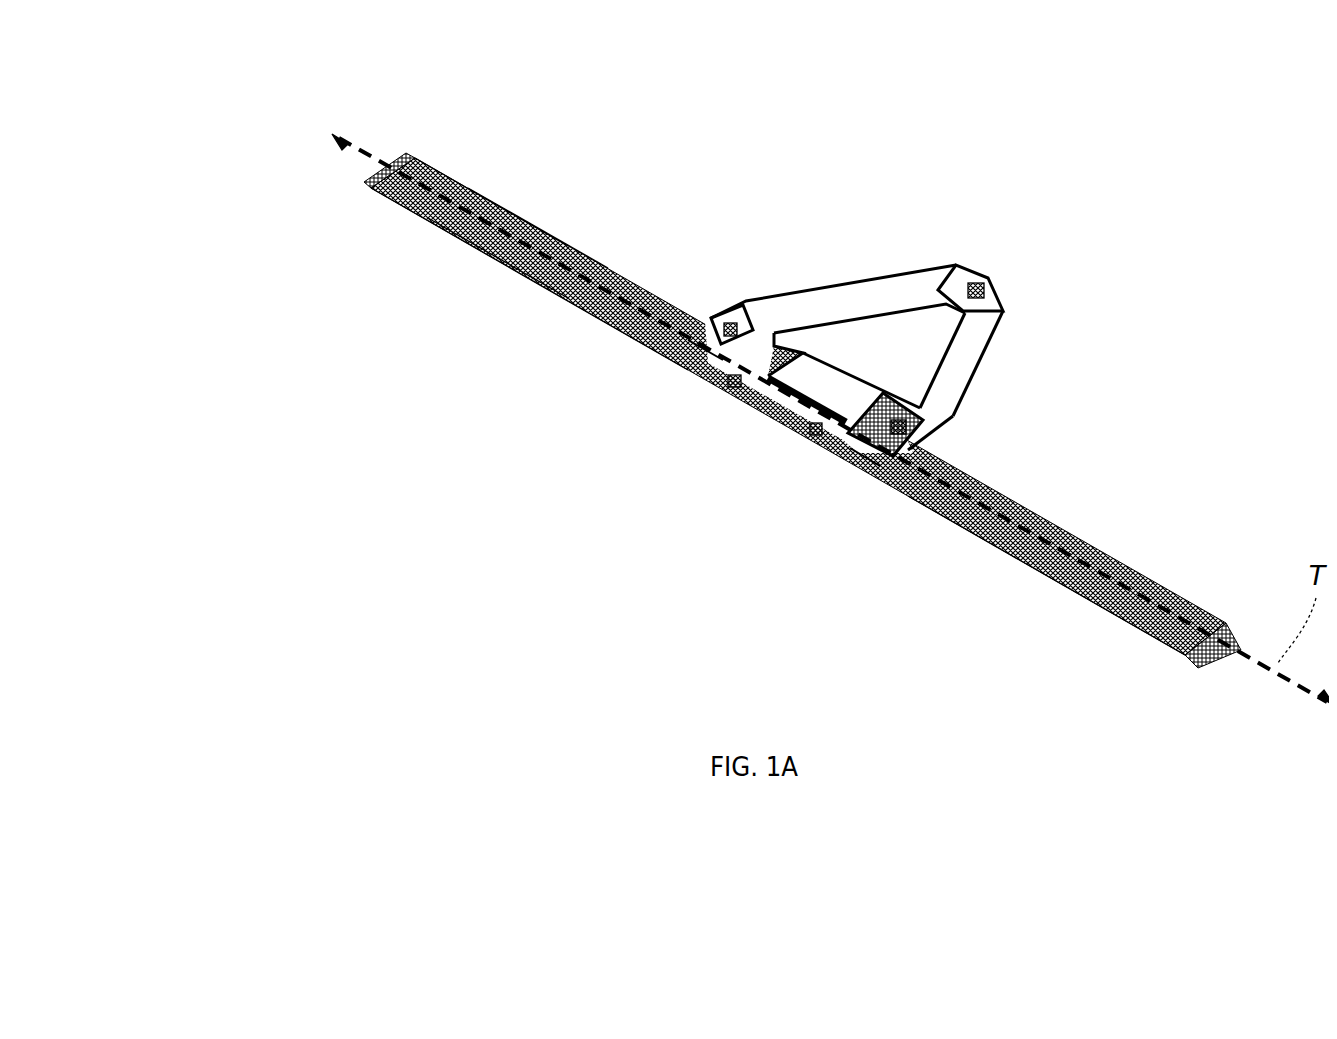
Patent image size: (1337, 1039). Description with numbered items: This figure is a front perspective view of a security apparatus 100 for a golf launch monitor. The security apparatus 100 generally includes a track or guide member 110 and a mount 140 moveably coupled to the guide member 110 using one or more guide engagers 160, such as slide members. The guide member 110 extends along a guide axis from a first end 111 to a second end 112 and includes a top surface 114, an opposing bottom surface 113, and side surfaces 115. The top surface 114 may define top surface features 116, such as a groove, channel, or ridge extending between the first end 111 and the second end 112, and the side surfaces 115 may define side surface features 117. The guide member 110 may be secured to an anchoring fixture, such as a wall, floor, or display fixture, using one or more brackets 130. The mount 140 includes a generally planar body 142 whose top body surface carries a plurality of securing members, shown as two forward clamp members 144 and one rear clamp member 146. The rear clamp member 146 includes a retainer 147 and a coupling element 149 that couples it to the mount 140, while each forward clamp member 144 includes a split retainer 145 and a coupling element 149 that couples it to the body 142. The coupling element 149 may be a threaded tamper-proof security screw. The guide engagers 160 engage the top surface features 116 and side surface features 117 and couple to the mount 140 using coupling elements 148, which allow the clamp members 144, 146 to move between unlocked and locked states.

The security apparatus 100 is at (280, 95).
The guide member 110 is at (535, 290).
The first end 111 is at (363, 180).
The second end 112 is at (1177, 647).
The bottom surface 113 is at (610, 328).
The top surface 114 is at (533, 227).
The side surfaces 115 is at (480, 247).
The top surface features 116 is at (457, 175).
The side surface features 117 is at (990, 555).
The brackets 130 is at (372, 163).
The mount 140 is at (893, 340).
The body 142 is at (907, 262).
The forward clamp members 144 is at (710, 318).
The retainer 145 is at (685, 360).
The rear clamp member 146 is at (975, 270).
The retainer 147 is at (1005, 300).
The coupling elements 148 is at (782, 331).
The coupling element 149 is at (722, 315).
The guide engagers 160 is at (797, 460).